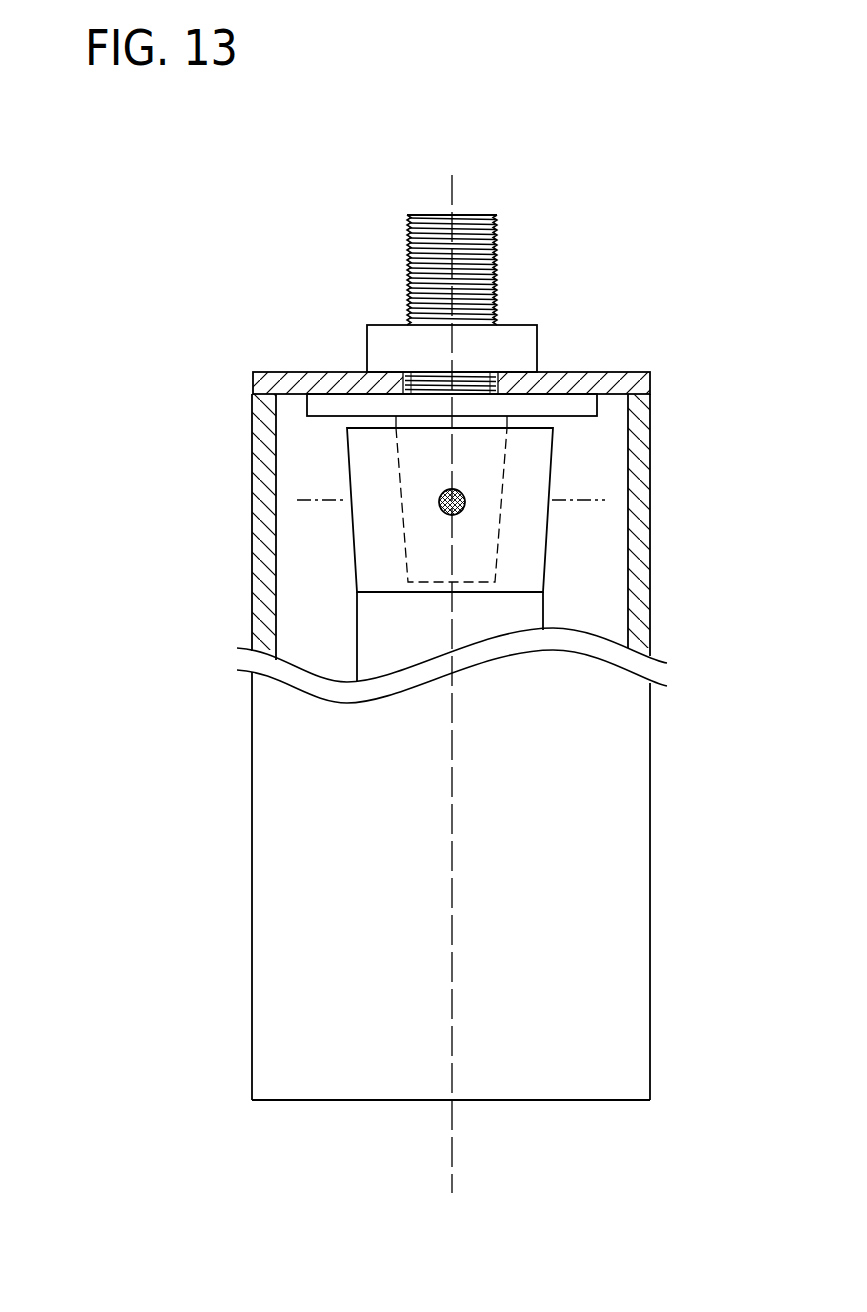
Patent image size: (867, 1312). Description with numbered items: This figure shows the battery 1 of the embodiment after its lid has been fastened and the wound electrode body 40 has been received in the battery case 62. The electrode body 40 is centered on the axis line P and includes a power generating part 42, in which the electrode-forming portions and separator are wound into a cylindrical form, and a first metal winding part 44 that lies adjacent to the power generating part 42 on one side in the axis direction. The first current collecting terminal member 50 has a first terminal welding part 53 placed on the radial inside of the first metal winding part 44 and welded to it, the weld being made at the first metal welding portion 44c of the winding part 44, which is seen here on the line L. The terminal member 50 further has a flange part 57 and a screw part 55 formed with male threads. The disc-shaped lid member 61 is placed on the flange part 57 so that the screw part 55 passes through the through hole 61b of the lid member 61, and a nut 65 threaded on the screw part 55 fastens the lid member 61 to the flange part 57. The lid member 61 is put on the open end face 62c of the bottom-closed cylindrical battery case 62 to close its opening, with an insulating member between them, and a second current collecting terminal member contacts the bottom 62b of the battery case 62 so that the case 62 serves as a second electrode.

The sealed battery 1 is at (303, 222).
The first current collecting terminal member 50 is at (452, 270).
The screw part 55 is at (480, 259).
The nut 65 is at (375, 352).
The lid member 61 is at (448, 347).
The open end face 62c is at (267, 388).
The through hole 61b is at (488, 378).
The flange part 57 is at (584, 408).
The first metal winding part 44 is at (452, 510).
The first terminal welding part 53 is at (507, 458).
The first metal welding portion 44c is at (438, 494).
The power generating part 42 is at (375, 627).
The electrode body 40 is at (547, 612).
The battery case 62 is at (491, 788).
The bottom 62b is at (567, 1100).
The reference line L is at (370, 535).
The axis line P is at (448, 1168).